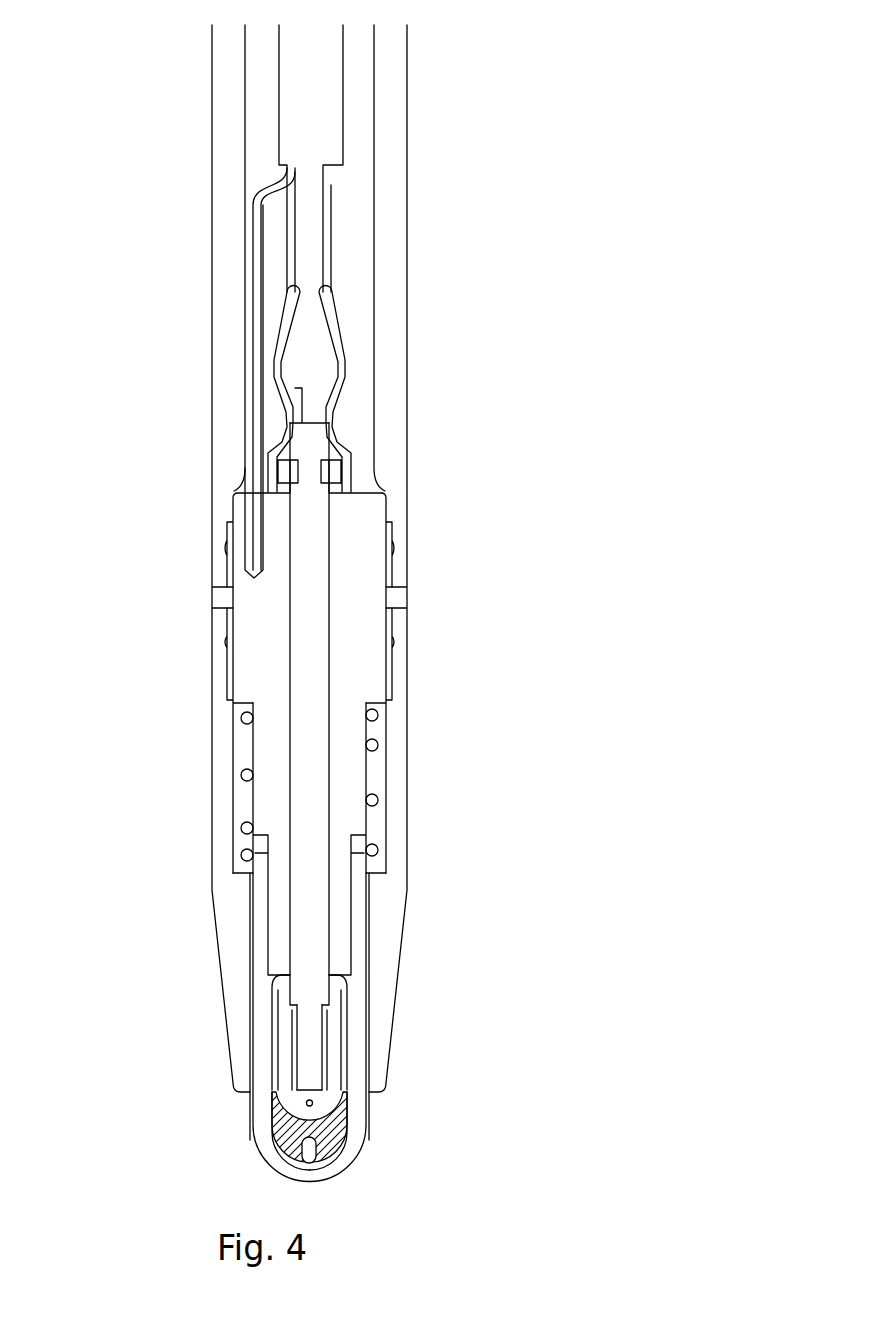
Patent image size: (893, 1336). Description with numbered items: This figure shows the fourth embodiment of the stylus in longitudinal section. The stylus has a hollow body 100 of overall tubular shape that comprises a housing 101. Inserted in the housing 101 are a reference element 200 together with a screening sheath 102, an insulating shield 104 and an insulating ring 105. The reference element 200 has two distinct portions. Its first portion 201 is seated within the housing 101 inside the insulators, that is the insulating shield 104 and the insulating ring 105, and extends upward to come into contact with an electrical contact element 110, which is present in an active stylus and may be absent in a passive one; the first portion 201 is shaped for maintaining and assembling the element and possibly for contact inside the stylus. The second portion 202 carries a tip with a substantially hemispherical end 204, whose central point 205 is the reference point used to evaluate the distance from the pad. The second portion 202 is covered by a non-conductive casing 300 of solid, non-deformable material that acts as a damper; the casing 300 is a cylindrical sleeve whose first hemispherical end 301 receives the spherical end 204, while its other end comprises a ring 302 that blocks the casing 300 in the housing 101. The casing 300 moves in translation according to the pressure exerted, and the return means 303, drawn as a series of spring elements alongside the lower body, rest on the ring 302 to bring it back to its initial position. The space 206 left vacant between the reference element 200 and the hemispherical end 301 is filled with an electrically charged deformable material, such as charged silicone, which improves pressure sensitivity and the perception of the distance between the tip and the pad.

The hollow body 100 is at (230, 258).
The housing 101 is at (358, 38).
The screening sheath 102 is at (342, 325).
The insulating shield 104 is at (253, 600).
The insulating ring 105 is at (280, 1018).
The electrical contact element 110 is at (310, 423).
The reference element 200 is at (330, 578).
The first portion 201 is at (310, 675).
The second portion 202 is at (308, 1045).
The hemispherical end 204 is at (275, 1124).
The central point 205 is at (303, 1103).
The space 206 is at (335, 1148).
The non-conductive casing 300 is at (367, 1107).
The first hemispherical end 301 is at (280, 1165).
The ring 302 is at (243, 863).
The detent balls 303 is at (242, 776).